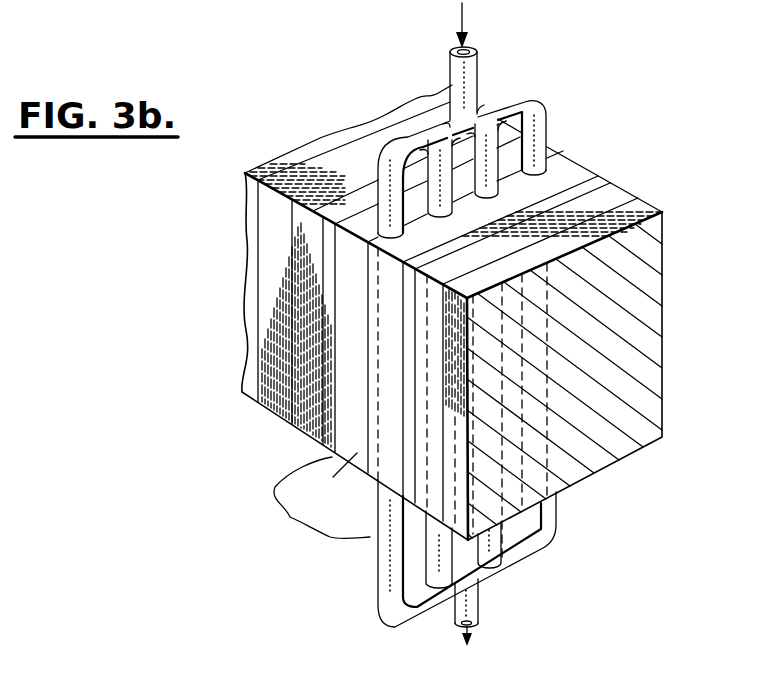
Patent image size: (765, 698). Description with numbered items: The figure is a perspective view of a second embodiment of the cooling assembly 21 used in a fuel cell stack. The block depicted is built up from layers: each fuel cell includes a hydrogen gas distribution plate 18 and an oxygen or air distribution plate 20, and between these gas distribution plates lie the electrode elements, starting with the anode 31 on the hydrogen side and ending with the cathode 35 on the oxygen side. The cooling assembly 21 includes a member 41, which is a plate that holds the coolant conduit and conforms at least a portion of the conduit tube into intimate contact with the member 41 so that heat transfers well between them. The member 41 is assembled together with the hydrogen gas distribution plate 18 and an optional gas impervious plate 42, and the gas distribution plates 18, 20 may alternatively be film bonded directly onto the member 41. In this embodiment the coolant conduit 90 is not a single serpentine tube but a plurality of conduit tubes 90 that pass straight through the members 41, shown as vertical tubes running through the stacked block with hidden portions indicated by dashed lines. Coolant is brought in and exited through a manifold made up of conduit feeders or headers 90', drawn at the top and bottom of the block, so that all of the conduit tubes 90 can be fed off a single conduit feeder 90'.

The hydrogen gas distribution plate 18 is at (300, 255).
The oxygen or air distribution plate 20 is at (273, 212).
The cooling assembly 21 is at (303, 499).
The anode 31 is at (650, 204).
The cathode 35 is at (262, 174).
The member 41 is at (392, 472).
The gas impervious plate 42 is at (330, 302).
The conduit tube 90 is at (455, 364).
The conduit feeder 90' is at (506, 324).